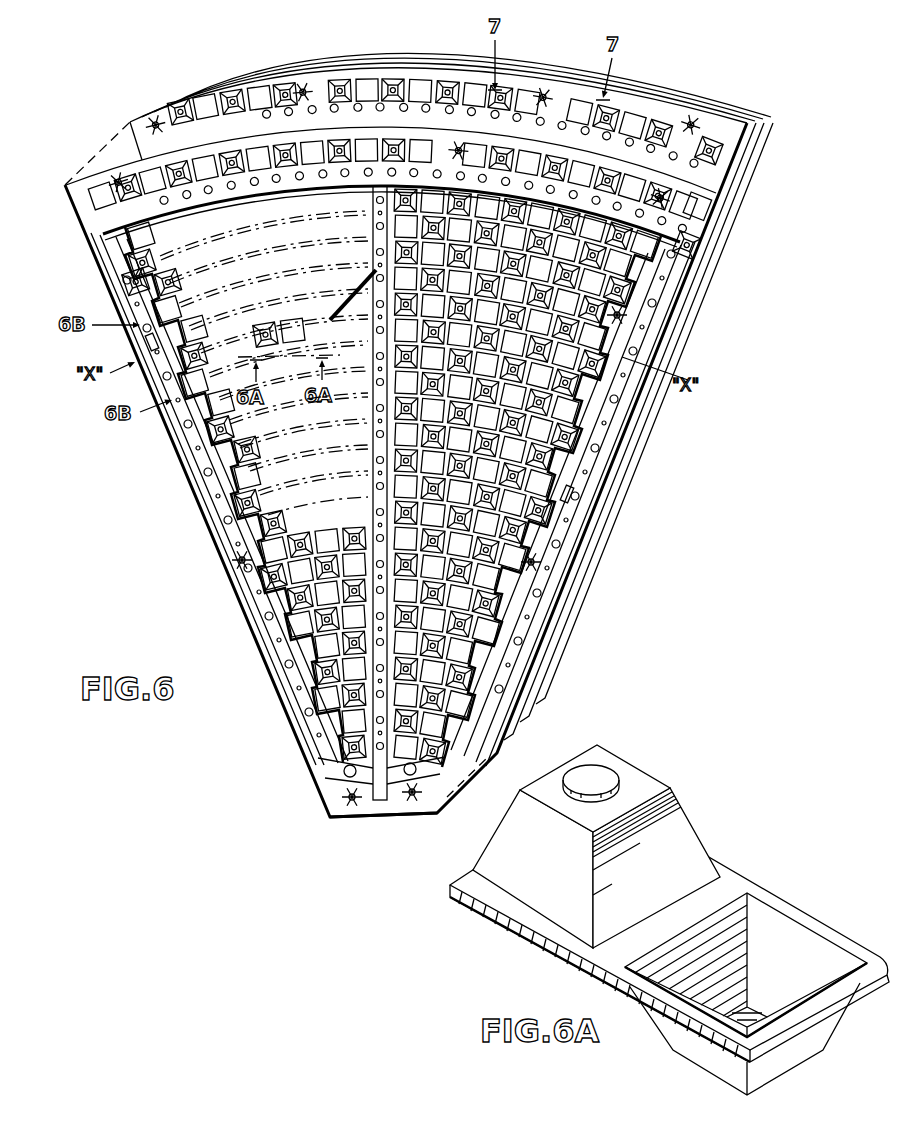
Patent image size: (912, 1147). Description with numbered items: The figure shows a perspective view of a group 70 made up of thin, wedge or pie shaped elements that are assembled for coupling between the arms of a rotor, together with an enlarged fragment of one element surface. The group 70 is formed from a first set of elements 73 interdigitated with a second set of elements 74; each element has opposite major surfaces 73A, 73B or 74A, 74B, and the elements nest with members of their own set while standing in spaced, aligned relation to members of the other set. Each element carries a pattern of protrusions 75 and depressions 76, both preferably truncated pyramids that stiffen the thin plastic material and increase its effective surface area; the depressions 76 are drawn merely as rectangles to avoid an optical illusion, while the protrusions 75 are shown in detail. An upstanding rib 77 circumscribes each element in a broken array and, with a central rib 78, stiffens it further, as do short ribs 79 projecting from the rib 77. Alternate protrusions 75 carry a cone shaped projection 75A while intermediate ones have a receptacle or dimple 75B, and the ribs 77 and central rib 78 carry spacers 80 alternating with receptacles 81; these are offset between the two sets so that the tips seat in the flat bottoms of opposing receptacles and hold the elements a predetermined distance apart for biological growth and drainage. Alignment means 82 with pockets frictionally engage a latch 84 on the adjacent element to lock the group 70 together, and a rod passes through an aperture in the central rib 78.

In FIG. 6, the group 70 is at (92, 128).
In FIG. 6, the wedge shaped element of first set 73 is at (63, 200).
In FIG. 6, the major surface 73A is at (420, 818).
In FIG. 6, the major surface 73B is at (455, 800).
In FIG. 6, the wedge shaped element of second set 74 is at (740, 123).
In FIG. 6, the major surface 74A is at (697, 240).
In FIG. 6, the major surface 74B is at (700, 231).
In FIG. 6, the protrusion 75 is at (245, 478).
In FIG. 6A, the protrusion 75 is at (690, 833).
In FIG. 6, the cone shaped projection 75A is at (143, 291).
In FIG. 6, the receptacle or dimple 75B is at (123, 266).
In FIG. 6A, the receptacle or dimple 75B is at (612, 784).
In FIG. 6, the depression 76 is at (243, 513).
In FIG. 6A, the depression 76 is at (700, 1063).
In FIG. 6, the upstanding rib 77 is at (200, 447).
In FIG. 6, the central rib 78 is at (372, 234).
In FIG. 6, the short rib 79 is at (130, 212).
In FIG. 6, the spacer or projection 80 is at (163, 373).
In FIG. 6, the receptacle or dimple 81 is at (275, 634).
In FIG. 6, the alignment means 82 is at (155, 116).
In FIG. 6, the latch 84 is at (150, 341).